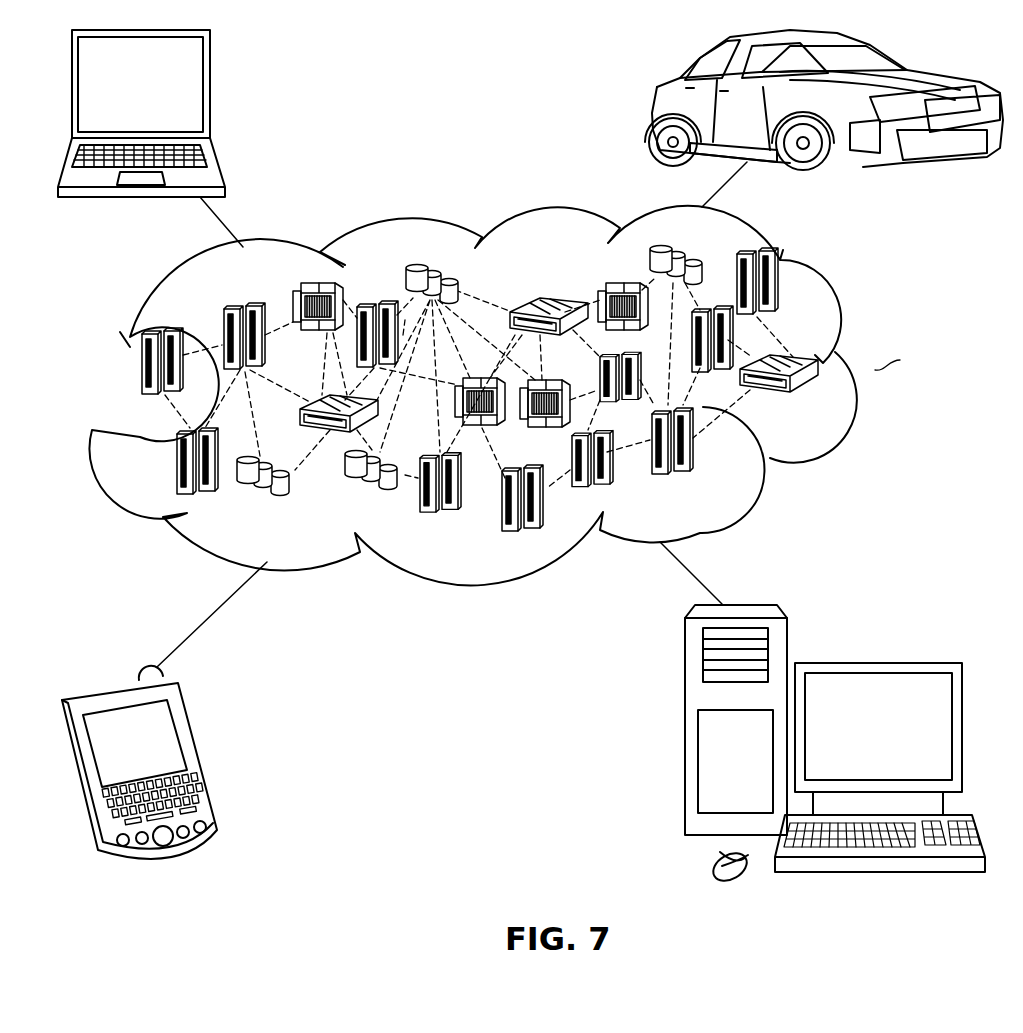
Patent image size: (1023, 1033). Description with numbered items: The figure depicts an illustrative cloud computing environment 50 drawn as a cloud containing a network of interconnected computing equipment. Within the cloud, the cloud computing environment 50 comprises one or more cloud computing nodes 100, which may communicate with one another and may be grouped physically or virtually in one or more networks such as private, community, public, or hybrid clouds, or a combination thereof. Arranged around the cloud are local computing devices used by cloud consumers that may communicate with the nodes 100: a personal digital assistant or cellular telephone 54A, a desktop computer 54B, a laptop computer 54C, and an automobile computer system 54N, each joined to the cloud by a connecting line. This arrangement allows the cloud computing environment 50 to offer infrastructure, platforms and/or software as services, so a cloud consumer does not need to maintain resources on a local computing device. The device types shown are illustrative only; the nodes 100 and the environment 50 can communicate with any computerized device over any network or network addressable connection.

The cloud computing environment 50 is at (512, 396).
The cloud computing nodes 100 is at (817, 400).
The personal digital assistant or cellular telephone 54A is at (200, 757).
The desktop computer 54B is at (875, 662).
The laptop computer 54C is at (210, 93).
The automobile computer system 54N is at (652, 108).